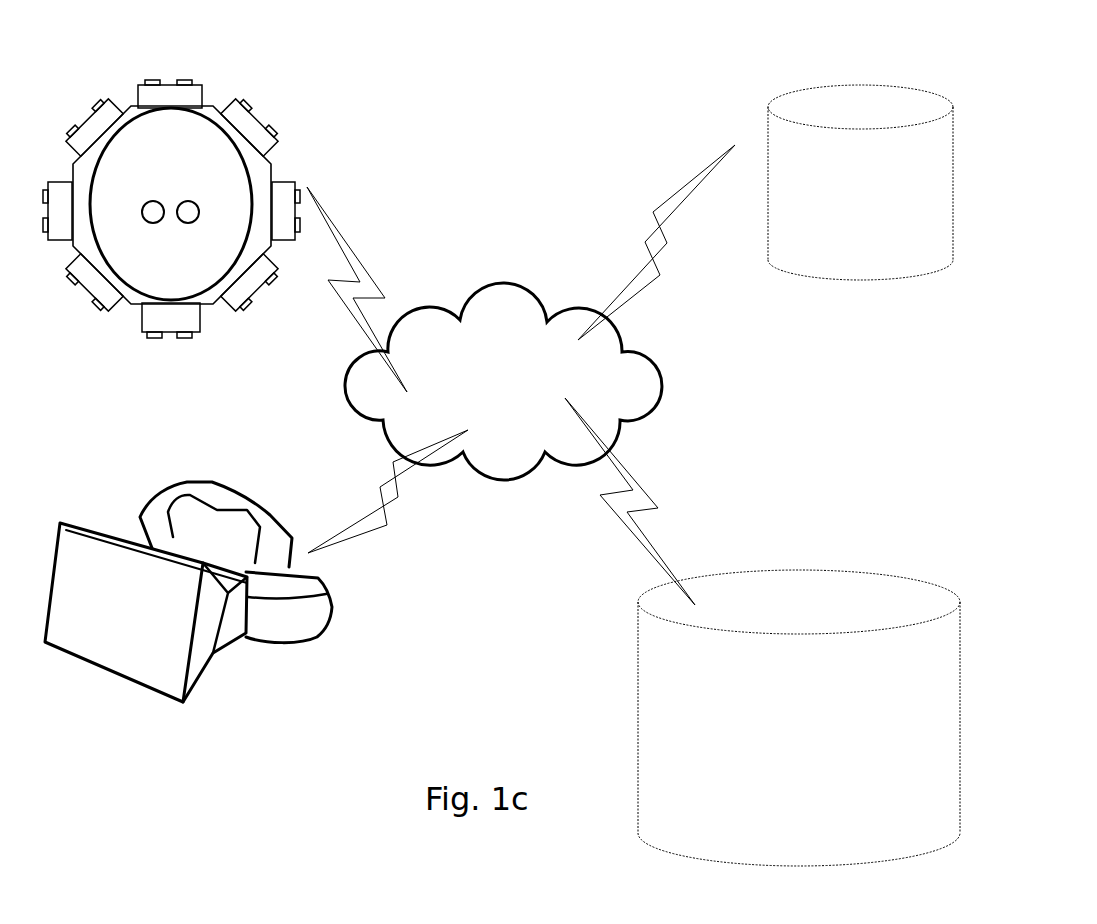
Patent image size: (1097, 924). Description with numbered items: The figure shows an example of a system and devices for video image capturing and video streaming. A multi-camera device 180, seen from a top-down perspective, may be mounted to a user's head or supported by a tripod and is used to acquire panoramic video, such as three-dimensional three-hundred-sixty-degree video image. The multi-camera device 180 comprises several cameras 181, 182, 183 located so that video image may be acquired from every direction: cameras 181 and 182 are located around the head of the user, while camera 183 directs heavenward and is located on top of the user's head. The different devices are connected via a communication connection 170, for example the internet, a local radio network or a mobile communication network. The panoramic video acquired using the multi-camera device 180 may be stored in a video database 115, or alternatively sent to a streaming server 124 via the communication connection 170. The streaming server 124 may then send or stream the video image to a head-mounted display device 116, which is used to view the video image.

The multi-camera device 180 is at (112, 87).
The camera 181 is at (237, 117).
The camera 182 is at (285, 192).
The camera 183 is at (145, 202).
The communication connection 170 is at (495, 318).
The video database 115 is at (805, 88).
The streaming server 124 is at (823, 560).
The head-mounted display device 116 is at (142, 493).